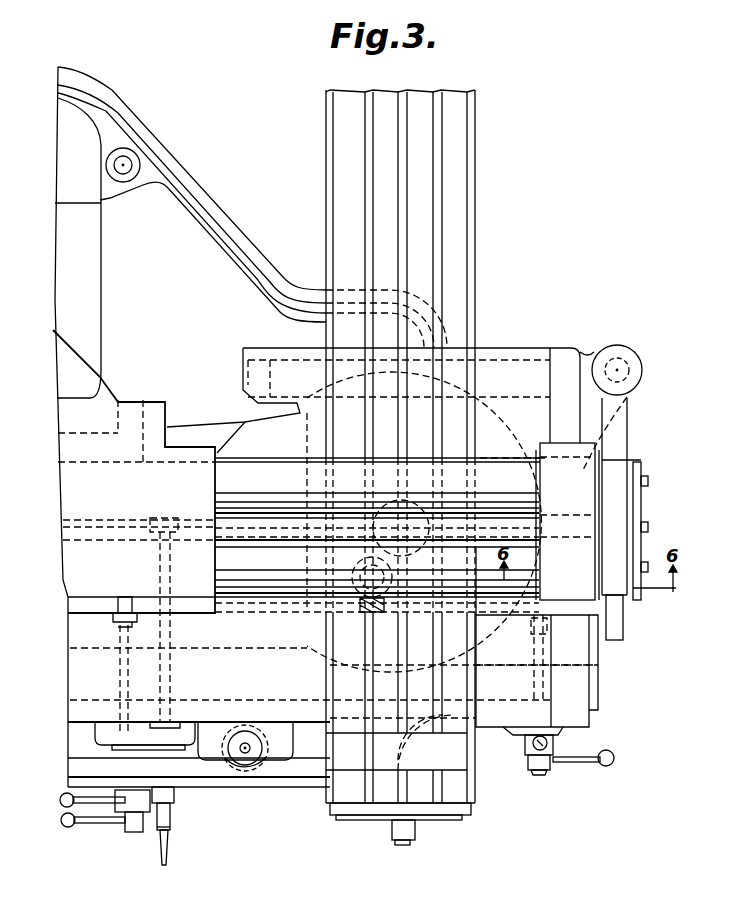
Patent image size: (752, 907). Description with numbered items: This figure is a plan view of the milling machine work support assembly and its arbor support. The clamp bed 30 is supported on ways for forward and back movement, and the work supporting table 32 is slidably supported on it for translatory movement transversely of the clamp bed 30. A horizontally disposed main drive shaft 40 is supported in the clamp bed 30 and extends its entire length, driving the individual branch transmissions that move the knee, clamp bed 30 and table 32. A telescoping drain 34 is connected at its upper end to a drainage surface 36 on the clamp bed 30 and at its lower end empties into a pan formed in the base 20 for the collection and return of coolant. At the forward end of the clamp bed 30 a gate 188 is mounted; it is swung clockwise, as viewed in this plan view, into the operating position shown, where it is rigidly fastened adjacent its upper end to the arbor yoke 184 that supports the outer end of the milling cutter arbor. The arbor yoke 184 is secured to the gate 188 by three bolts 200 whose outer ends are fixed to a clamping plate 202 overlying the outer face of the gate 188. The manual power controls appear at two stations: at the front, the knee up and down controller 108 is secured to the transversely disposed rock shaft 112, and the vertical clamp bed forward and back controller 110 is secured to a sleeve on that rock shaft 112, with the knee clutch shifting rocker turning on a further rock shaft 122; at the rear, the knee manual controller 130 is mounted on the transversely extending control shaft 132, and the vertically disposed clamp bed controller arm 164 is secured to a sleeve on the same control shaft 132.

The base 20 is at (247, 248).
The main drive shaft 40 is at (97, 523).
The gate 188 is at (618, 432).
The arbor yoke 184 is at (576, 497).
The clamping plate 202 is at (629, 470).
The bolts 200 is at (648, 483).
The rock shaft 122 is at (598, 665).
The clamp bed 30 is at (566, 688).
The clamp bed forward and back power controller 110 is at (545, 742).
The knee up and down controller 108 is at (586, 764).
The rock shaft 112 is at (540, 775).
The drainage surface 36 is at (218, 735).
The telescoping drain 34 is at (238, 768).
The work supporting table 32 is at (345, 790).
The controller arm 164 is at (92, 797).
The manual controller 130 is at (100, 826).
The control shaft 132 is at (137, 832).